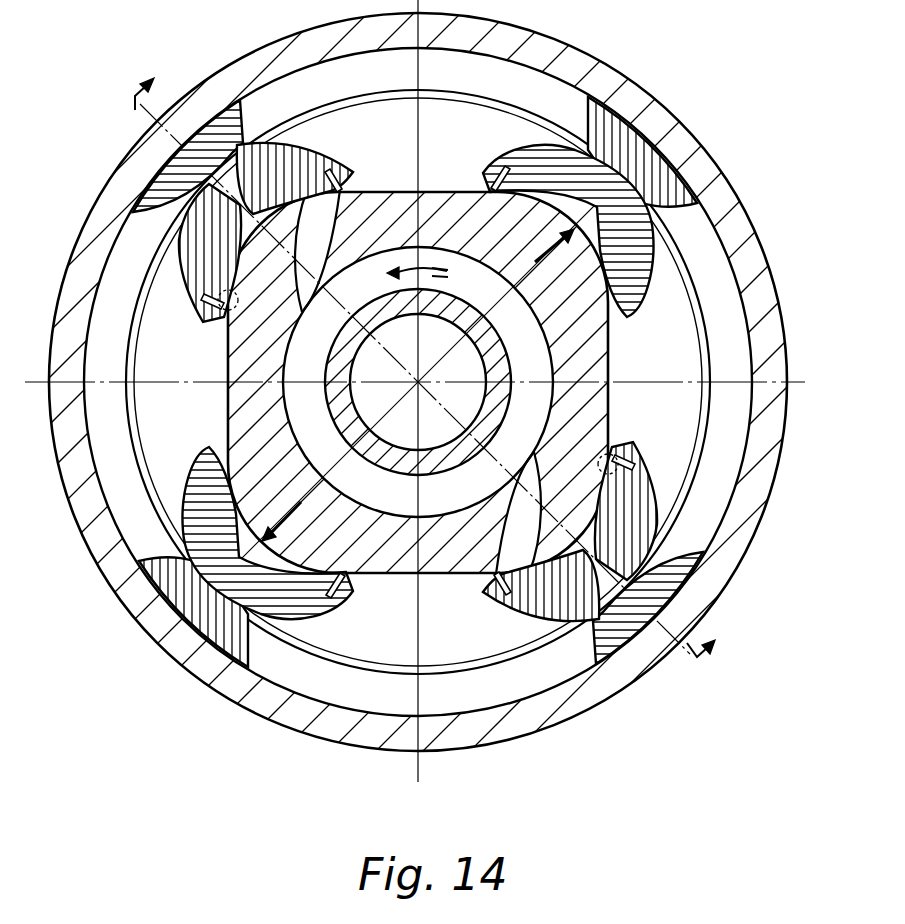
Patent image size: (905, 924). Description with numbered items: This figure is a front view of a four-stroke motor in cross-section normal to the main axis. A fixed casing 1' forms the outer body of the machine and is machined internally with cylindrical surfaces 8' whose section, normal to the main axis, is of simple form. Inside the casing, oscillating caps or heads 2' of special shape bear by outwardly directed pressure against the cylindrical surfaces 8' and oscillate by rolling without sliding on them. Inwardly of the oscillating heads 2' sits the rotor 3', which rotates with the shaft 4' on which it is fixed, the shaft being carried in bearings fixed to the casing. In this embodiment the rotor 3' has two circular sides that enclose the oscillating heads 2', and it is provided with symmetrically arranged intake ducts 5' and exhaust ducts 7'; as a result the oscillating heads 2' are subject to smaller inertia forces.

The fixed casing 1' is at (452, 462).
The oscillating head 2' is at (418, 382).
The rotor 3' is at (452, 462).
The shaft 4' is at (452, 462).
The intake duct 5' is at (418, 394).
The exhaust duct 7' is at (418, 382).
The cylindrical surface 8' is at (418, 371).